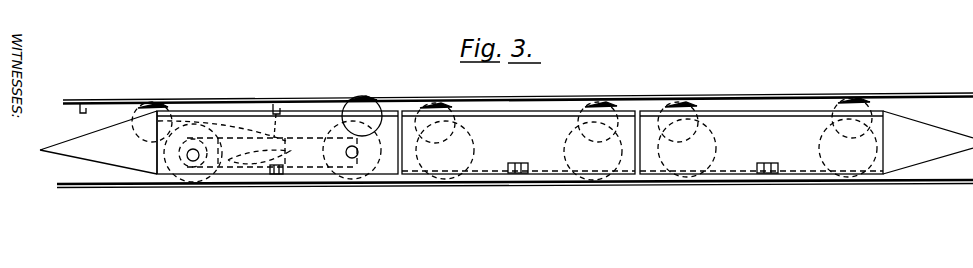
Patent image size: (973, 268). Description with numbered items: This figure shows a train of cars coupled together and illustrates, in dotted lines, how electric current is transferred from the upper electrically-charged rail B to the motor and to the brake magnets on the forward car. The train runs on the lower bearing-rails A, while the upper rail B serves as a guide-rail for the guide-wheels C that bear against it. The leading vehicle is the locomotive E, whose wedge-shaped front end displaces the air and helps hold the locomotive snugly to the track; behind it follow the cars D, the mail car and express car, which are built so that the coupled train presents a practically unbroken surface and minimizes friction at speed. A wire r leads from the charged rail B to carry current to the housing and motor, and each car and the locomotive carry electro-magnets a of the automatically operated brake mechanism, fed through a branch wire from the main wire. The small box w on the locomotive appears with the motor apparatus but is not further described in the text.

The lower bearing-rails A is at (506, 161).
The upper electrically-charged rail B is at (258, 99).
The guide-wheels C is at (150, 101).
The cars D is at (473, 150).
The locomotive E is at (311, 124).
The wire r is at (215, 115).
The switch box w is at (262, 178).
The electro-magnets a is at (523, 176).